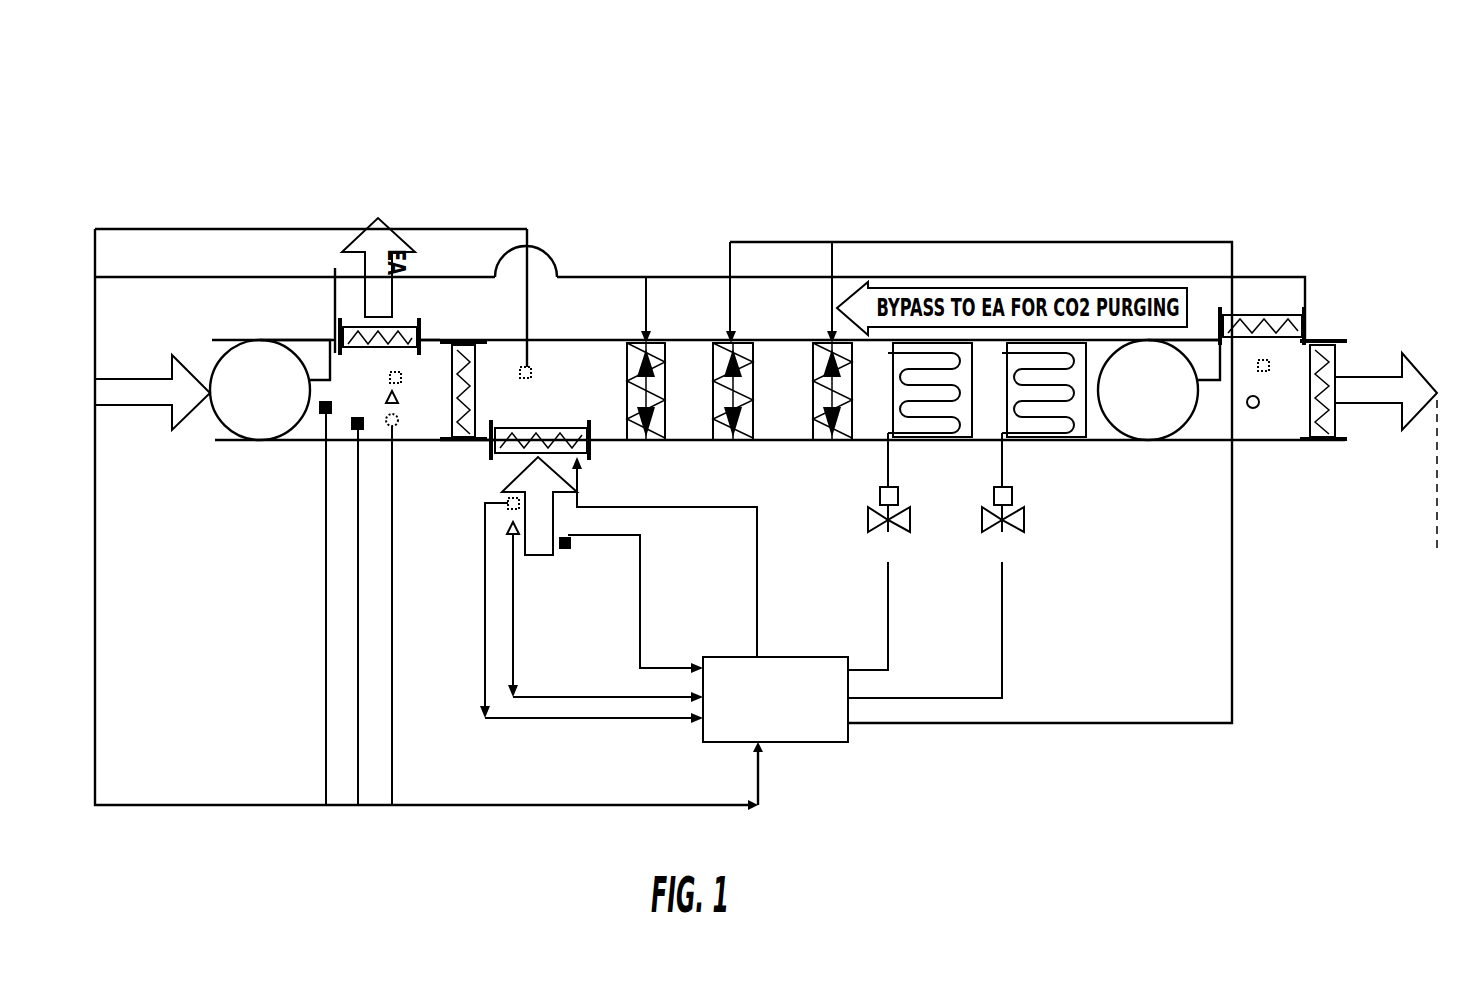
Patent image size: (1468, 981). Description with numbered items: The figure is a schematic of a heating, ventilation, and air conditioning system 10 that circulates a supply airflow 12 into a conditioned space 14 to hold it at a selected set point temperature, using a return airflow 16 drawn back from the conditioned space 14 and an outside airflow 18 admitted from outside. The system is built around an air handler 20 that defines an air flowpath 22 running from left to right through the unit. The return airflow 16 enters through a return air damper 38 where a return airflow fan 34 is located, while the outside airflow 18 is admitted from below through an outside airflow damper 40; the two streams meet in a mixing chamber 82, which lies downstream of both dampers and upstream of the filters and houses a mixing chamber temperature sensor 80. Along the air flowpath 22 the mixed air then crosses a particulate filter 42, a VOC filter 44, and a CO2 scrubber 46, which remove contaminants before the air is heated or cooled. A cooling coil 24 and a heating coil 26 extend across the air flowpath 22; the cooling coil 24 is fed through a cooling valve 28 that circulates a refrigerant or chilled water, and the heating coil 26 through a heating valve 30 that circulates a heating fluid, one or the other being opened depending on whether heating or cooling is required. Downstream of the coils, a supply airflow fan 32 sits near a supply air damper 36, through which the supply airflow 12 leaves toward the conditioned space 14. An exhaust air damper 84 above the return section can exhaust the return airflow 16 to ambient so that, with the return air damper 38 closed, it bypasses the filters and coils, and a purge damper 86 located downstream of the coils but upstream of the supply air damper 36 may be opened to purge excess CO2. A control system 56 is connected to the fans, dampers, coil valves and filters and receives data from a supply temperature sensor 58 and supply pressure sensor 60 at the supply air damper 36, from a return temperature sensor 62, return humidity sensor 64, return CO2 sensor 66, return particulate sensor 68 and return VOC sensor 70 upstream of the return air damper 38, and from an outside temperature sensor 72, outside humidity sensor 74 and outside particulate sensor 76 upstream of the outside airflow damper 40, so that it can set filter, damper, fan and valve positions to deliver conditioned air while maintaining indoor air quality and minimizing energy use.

The HVAC system 10 is at (1030, 125).
The supply airflow 12 is at (1418, 589).
The conditioned space 14 is at (1360, 378).
The return airflow 16 is at (128, 378).
The outside airflow 18 is at (538, 550).
The air handler 20 is at (595, 340).
The air flowpath 22 is at (768, 397).
The cooling coil 24 is at (921, 392).
The heating coil 26 is at (1035, 392).
The cooling valve 28 is at (905, 565).
The heating valve 30 is at (1019, 565).
The supply airflow fan 32 is at (1138, 379).
The return airflow fan 34 is at (250, 379).
The supply air damper 36 is at (1318, 340).
The return air damper 38 is at (462, 343).
The outside airflow damper 40 is at (500, 460).
The particulate filter 42 is at (648, 343).
The VOC filter 44 is at (738, 343).
The CO2 scrubber 46 is at (828, 343).
The control system 56 is at (810, 742).
The supply temperature sensor 58 is at (1270, 366).
The supply pressure sensor 60 is at (1255, 408).
The return temperature sensor 62 is at (389, 375).
The return humidity sensor 64 is at (401, 397).
The return CO2 sensor 66 is at (398, 423).
The return particulate sensor 68 is at (333, 407).
The return VOC sensor 70 is at (350, 425).
The outside temperature sensor 72 is at (506, 505).
The outside humidity sensor 74 is at (507, 531).
The outside particulate sensor 76 is at (568, 550).
The mixing chamber temperature sensor 80 is at (533, 370).
The mixing chamber 82 is at (575, 394).
The exhaust air damper 84 is at (347, 328).
The purge damper 86 is at (1275, 318).